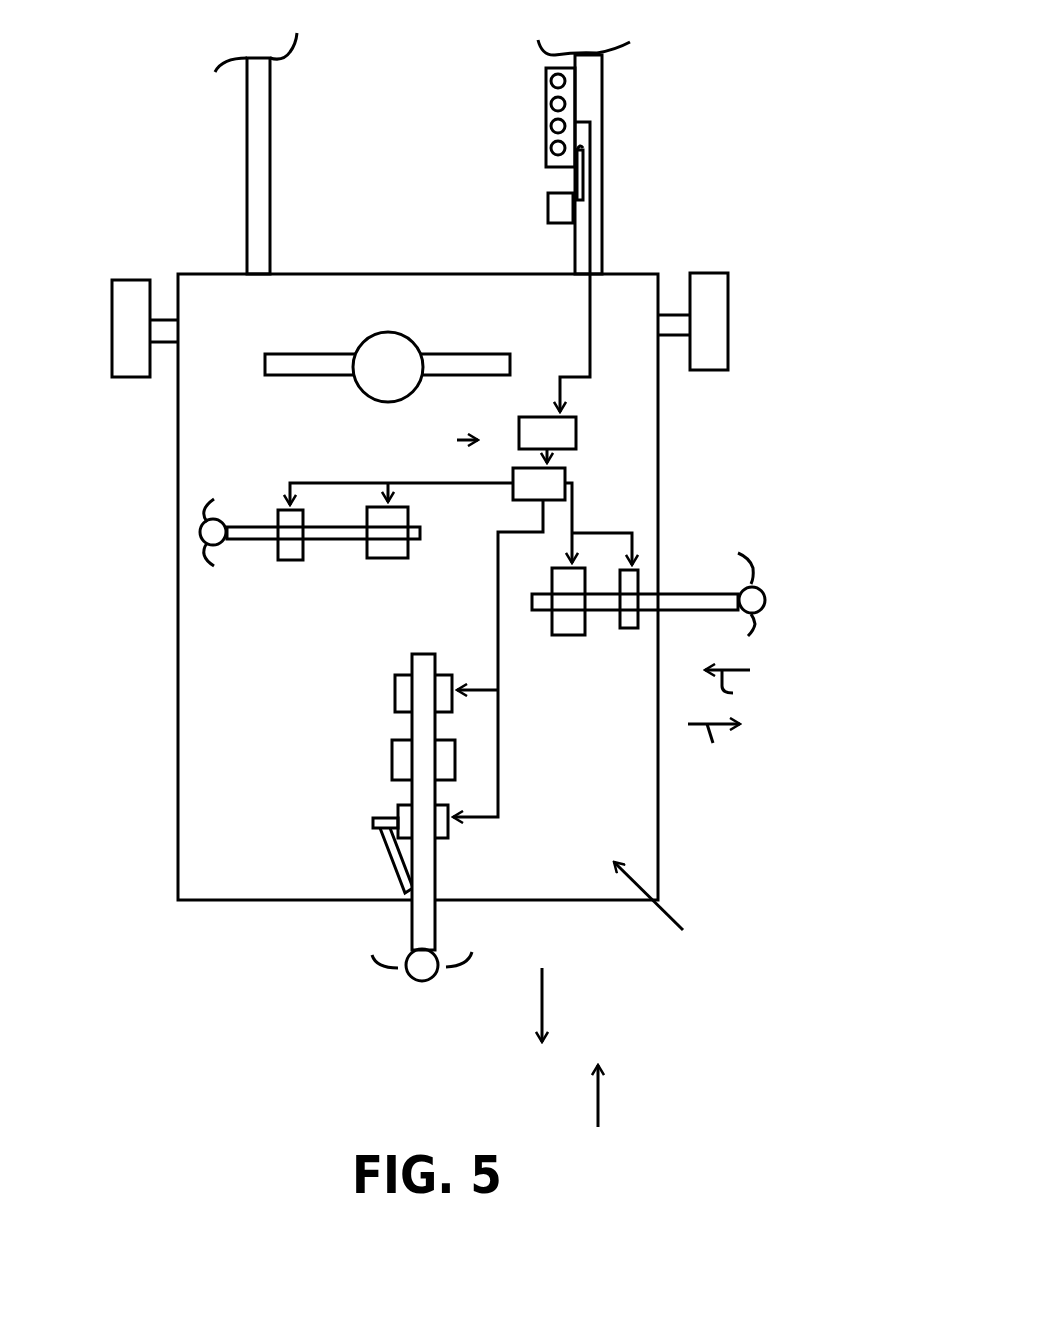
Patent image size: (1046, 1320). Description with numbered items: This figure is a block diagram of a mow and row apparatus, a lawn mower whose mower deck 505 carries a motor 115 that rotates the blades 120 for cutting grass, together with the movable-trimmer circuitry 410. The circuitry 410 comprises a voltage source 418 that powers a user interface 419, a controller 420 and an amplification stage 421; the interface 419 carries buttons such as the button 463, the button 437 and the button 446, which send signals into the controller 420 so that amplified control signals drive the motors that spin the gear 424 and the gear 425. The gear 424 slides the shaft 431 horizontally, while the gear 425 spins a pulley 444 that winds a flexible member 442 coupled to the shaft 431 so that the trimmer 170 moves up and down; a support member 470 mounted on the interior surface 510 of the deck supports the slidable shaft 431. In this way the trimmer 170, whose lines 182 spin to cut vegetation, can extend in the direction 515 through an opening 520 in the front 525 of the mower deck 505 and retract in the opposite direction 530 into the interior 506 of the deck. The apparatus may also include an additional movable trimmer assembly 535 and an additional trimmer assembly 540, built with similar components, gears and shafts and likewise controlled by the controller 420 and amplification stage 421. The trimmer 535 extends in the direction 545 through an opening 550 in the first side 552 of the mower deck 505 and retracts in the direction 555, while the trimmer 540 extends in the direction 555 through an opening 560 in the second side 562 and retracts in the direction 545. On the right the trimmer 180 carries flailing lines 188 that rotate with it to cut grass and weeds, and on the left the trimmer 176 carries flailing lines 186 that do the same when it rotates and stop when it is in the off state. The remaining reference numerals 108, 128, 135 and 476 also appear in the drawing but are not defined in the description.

The housing 108 is at (638, 270).
The motor 115 is at (392, 333).
The blades 120 is at (273, 353).
The wheel 128 is at (125, 315).
The handle 135 is at (253, 157).
The trimmer 170 is at (422, 981).
The trimmer 176 is at (208, 532).
The trimmer 180 is at (752, 600).
The lines 182 is at (380, 970).
The flailing lines 186 is at (208, 502).
The flailing lines 188 is at (753, 553).
The circuitry 410 is at (437, 440).
The voltage source 418 is at (555, 210).
The user interface 419 is at (568, 90).
The controller chip 420 is at (578, 427).
The amplification stage 421 is at (568, 472).
The gear 424 is at (395, 690).
The gear 425 is at (397, 803).
The shaft 431 is at (415, 654).
The button 437 is at (550, 126).
The member 442 is at (390, 855).
The pulley 444 is at (373, 820).
The button 446 is at (550, 152).
The button 463 is at (546, 105).
The support member 470 is at (392, 767).
The switch 476 is at (546, 73).
The mower deck 505 is at (658, 820).
The interior 506 is at (674, 910).
The interior surface 510 is at (578, 793).
The direction 515 is at (542, 1013).
The opening 520 is at (410, 903).
The front 525 is at (543, 902).
The direction 530 is at (598, 1103).
The additional movable trimmer assembly 535 is at (680, 590).
The additional trimmer assembly 540 is at (338, 542).
The direction 545 is at (714, 752).
The opening 550 is at (660, 610).
The first side 552 is at (662, 472).
The direction 555 is at (740, 688).
The opening 560 is at (177, 523).
The second side 562 is at (177, 663).